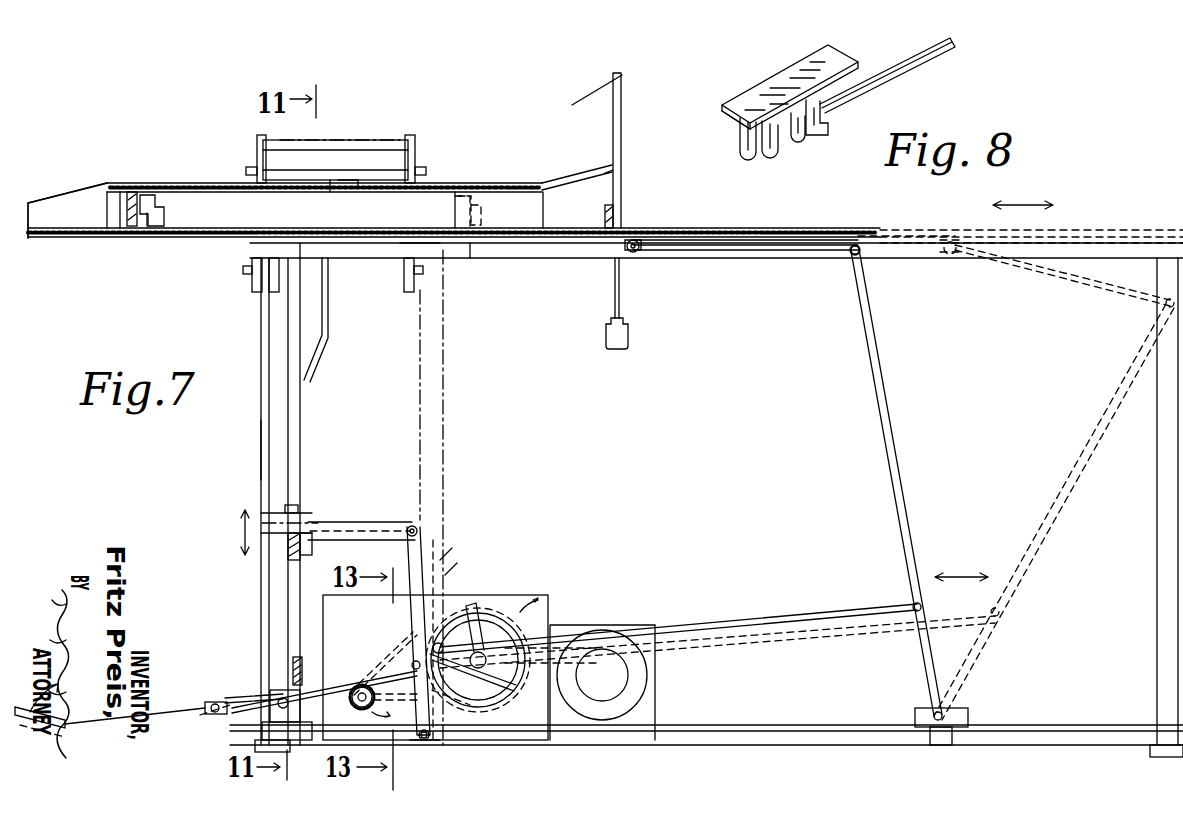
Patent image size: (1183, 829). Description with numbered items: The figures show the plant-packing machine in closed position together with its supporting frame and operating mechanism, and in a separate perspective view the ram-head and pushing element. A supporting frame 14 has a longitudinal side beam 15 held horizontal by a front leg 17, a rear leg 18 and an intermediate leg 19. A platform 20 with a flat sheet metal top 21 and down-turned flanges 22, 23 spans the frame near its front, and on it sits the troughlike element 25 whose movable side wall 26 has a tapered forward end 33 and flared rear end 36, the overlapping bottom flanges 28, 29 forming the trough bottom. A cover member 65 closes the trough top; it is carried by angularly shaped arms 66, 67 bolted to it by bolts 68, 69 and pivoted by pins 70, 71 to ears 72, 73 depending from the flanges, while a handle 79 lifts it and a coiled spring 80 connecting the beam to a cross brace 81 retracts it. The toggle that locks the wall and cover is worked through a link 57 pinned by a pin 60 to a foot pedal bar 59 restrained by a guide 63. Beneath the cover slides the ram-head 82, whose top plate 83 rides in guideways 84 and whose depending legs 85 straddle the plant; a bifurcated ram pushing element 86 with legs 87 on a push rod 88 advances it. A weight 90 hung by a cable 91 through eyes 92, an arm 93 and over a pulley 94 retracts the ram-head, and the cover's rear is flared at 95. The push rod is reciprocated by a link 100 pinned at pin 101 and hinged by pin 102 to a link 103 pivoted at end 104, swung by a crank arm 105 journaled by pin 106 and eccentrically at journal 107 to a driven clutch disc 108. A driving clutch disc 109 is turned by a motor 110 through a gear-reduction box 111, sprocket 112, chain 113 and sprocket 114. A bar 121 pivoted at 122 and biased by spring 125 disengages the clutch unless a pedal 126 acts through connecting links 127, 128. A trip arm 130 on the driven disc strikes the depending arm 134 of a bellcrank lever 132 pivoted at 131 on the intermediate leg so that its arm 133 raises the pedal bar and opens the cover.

In FIG. 7, the supporting frame 14 is at (252, 452).
In FIG. 7, the angle iron side beam 15 is at (1115, 245).
In FIG. 7, the front leg 17 is at (266, 313).
In FIG. 7, the rear leg 18 is at (1158, 490).
In FIG. 7, the intermediate leg 19 is at (455, 472).
In FIG. 7, the platform 20 is at (366, 254).
In FIG. 7, the flat sheet metal top 21 is at (346, 250).
In FIG. 7, the front flange 22 is at (292, 262).
In FIG. 7, the side flange 23 is at (416, 244).
In FIG. 7, the troughlike element 25 is at (85, 176).
In FIG. 7, the side wall 26 is at (97, 220).
In FIG. 7, the bottom flange 28 is at (67, 210).
In FIG. 7, the bottom flange 29 is at (112, 234).
In FIG. 7, the tapered forward end 33 is at (64, 194).
In FIG. 7, the flared rear end 36 is at (582, 224).
In FIG. 7, the link 57 is at (324, 343).
In FIG. 7, the foot pedal bar 59 is at (296, 573).
In FIG. 7, the pin 60 is at (302, 518).
In FIG. 7, the guide 63 is at (308, 532).
In FIG. 7, the cover member 65 is at (458, 188).
In FIG. 7, the angularly shaped arm 66 is at (255, 160).
In FIG. 7, the angularly shaped arm 67 is at (416, 158).
In FIG. 7, the bolt 68 is at (246, 172).
In FIG. 7, the bolt 69 is at (427, 172).
In FIG. 7, the pin 70 is at (243, 270).
In FIG. 7, the pin 71 is at (424, 272).
In FIG. 7, the ear 72 is at (279, 290).
In FIG. 7, the ear 73 is at (409, 290).
In FIG. 7, the handle 79 is at (372, 145).
In FIG. 7, the coiled spring 80 is at (355, 187).
In FIG. 7, the cross brace 81 is at (318, 160).
In FIG. 7, the ram-head 82 is at (129, 231).
In FIG. 8, the ram-head 82 is at (749, 75).
In FIG. 7, the top plate 83 is at (218, 192).
In FIG. 8, the top plate 83 is at (787, 78).
In FIG. 7, the guideway 84 is at (305, 190).
In FIG. 7, the depending leg 85 is at (138, 186).
In FIG. 8, the depending leg 85 is at (752, 150).
In FIG. 7, the ram pushing element 86 is at (169, 211).
In FIG. 8, the ram pushing element 86 is at (836, 134).
In FIG. 7, the leg 87 is at (147, 228).
In FIG. 8, the leg 87 is at (795, 134).
In FIG. 7, the push rod 88 is at (695, 233).
In FIG. 8, the push rod 88 is at (915, 65).
In FIG. 7, the weight 90 is at (606, 338).
In FIG. 7, the cable 91 is at (613, 286).
In FIG. 7, the eye 92 is at (605, 170).
In FIG. 7, the arm 93 is at (624, 135).
In FIG. 7, the pulley 94 is at (624, 214).
In FIG. 7, the flared rear portion 95 is at (612, 176).
In FIG. 7, the link 100 is at (760, 250).
In FIG. 7, the pin 101 is at (642, 252).
In FIG. 7, the pin 102 is at (850, 254).
In FIG. 7, the link 103 is at (1065, 478).
In FIG. 7, the pivoted end 104 is at (953, 715).
In FIG. 7, the crank arm 105 is at (786, 618).
In FIG. 7, the pin 106 is at (913, 604).
In FIG. 7, the journal 107 is at (490, 672).
In FIG. 7, the driven clutch disc 108 is at (494, 624).
In FIG. 7, the driving clutch disc 109 is at (508, 702).
In FIG. 7, the motor 110 is at (648, 678).
In FIG. 7, the gear-reduction box 111 is at (550, 603).
In FIG. 7, the sprocket 112 is at (372, 713).
In FIG. 7, the chain 113 is at (392, 650).
In FIG. 7, the sprocket 114 is at (452, 730).
In FIG. 7, the bar 121 is at (420, 692).
In FIG. 7, the pivot 122 is at (412, 750).
In FIG. 7, the spring 125 is at (296, 724).
In FIG. 7, the pedal 126 is at (60, 722).
In FIG. 7, the connecting link 127 is at (244, 700).
In FIG. 7, the connecting link 128 is at (328, 700).
In FIG. 7, the trip arm 130 is at (480, 600).
In FIG. 7, the pivot 131 is at (420, 528).
In FIG. 7, the bellcrank lever 132 is at (428, 552).
In FIG. 7, the arm 133 is at (372, 520).
In FIG. 7, the depending arm 134 is at (438, 588).